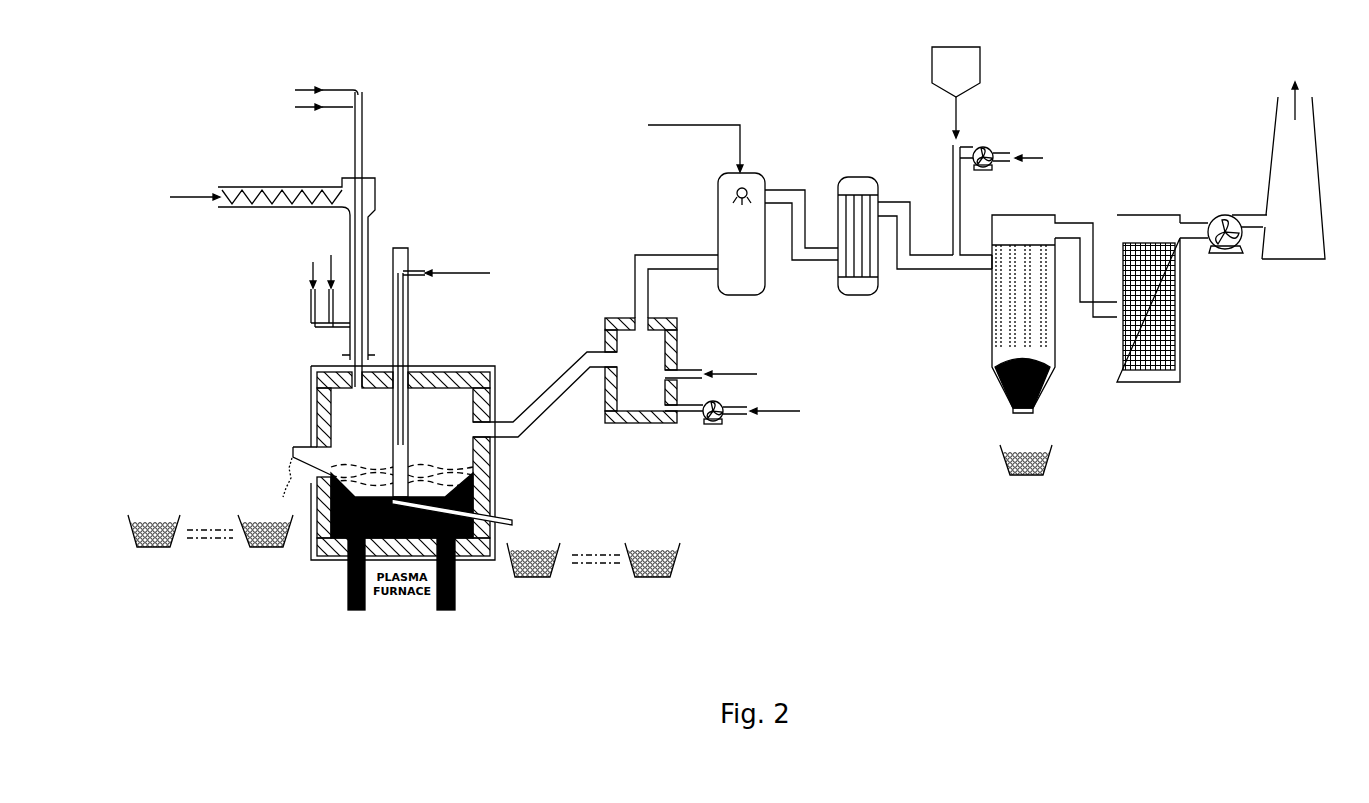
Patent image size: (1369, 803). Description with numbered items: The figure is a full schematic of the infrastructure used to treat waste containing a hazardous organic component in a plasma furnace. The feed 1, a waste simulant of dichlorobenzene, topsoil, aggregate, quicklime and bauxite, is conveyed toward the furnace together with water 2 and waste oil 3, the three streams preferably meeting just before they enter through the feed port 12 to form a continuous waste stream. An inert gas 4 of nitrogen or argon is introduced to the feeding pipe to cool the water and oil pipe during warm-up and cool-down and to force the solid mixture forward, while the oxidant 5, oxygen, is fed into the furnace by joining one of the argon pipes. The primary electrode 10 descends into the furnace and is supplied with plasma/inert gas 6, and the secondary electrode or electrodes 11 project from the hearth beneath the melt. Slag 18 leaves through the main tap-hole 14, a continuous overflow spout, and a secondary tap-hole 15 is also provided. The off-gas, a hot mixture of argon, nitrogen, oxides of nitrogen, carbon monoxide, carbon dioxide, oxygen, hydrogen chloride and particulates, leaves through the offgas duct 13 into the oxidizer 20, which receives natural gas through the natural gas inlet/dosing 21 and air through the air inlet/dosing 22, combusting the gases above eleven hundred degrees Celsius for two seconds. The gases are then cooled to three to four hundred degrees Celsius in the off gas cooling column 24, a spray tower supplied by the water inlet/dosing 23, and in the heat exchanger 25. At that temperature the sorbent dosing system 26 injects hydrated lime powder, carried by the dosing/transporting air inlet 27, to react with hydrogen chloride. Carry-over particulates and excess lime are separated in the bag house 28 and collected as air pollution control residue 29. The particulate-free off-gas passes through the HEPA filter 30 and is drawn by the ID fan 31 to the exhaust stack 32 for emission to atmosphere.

The feed 1 is at (188, 197).
The water 2 is at (306, 90).
The waste oil 3 is at (306, 107).
The inert gas 4 is at (313, 262).
The oxidant 5 is at (318, 242).
The plasma/inert gas 6 is at (443, 273).
The primary electrode 10 is at (408, 333).
The secondary electrode or electrodes 11 is at (358, 610).
The feed port 12 is at (350, 355).
The offgas duct 13 is at (517, 437).
The main tap-hole 14 is at (295, 447).
The secondary tap-hole 15 is at (512, 520).
The slag 18 is at (283, 497).
The oxidizer 20 is at (668, 318).
The natural gas inlet/dosing 21 is at (728, 374).
The air inlet/dosing 22 is at (770, 411).
The water inlet/dosing 23 is at (680, 125).
The off gas cooling column 24 is at (718, 222).
The heat exchanger 25 is at (838, 283).
The sorbent dosing system 26 is at (956, 116).
The dosing/transporting air inlet 27 is at (1023, 158).
The bag house 28 is at (992, 312).
The air pollution control residue 29 is at (1023, 413).
The HEPA filter 30 is at (1180, 312).
The ID fan 31 is at (1225, 215).
The exhaust stack 32 is at (1321, 207).